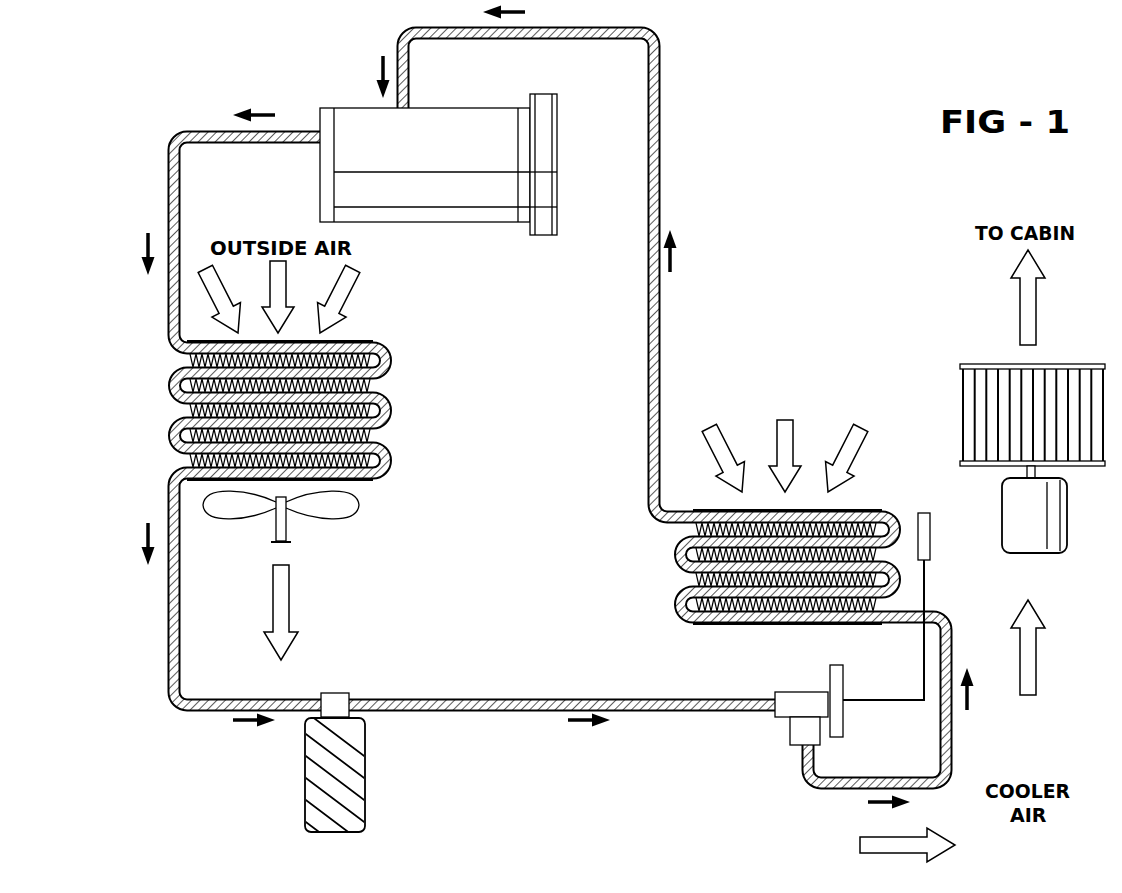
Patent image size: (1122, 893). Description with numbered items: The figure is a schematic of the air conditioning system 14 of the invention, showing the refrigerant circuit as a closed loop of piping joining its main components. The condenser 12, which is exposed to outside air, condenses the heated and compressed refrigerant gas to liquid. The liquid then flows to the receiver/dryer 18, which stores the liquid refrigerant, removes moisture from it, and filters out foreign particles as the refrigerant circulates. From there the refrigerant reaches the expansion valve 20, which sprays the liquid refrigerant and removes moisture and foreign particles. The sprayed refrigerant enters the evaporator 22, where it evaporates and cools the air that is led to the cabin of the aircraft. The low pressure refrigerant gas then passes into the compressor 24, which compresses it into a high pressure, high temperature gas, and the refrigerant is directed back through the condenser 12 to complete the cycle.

The condenser 12 is at (395, 413).
The air conditioning system 14 is at (806, 150).
The receiver/dryer 18 is at (345, 695).
The expansion valve 20 is at (778, 713).
The evaporator 22 is at (878, 512).
The compressor 24 is at (322, 118).